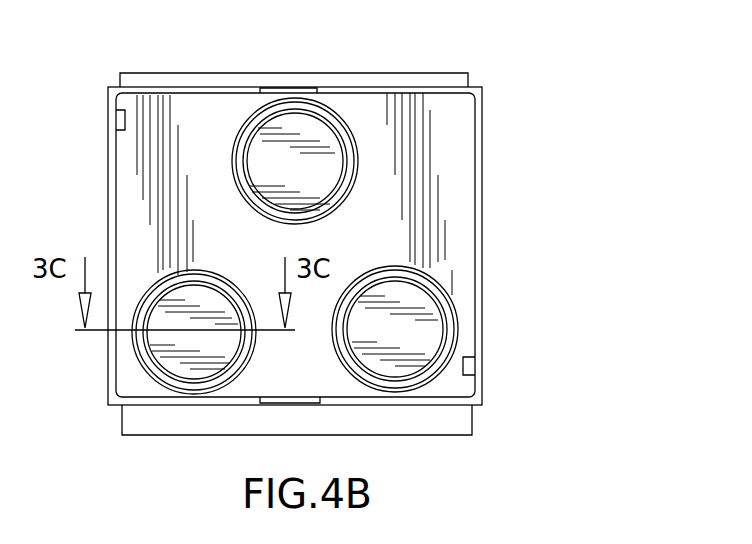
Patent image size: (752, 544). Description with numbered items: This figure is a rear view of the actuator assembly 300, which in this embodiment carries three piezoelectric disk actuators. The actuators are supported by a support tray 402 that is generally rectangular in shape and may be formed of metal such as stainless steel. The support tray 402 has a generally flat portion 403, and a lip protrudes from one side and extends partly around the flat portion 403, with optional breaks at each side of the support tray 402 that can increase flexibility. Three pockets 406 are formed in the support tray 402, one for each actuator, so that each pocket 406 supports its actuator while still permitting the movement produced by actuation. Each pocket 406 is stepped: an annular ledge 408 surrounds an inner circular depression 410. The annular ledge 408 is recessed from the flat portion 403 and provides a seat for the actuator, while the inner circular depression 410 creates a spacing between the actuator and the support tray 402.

The actuator assembly 300 is at (485, 75).
The support tray 402 is at (475, 193).
The flat portion 403 is at (447, 145).
The pocket 406 is at (460, 335).
The annular ledge 408 is at (437, 297).
The inner circular depression 410 is at (410, 353).